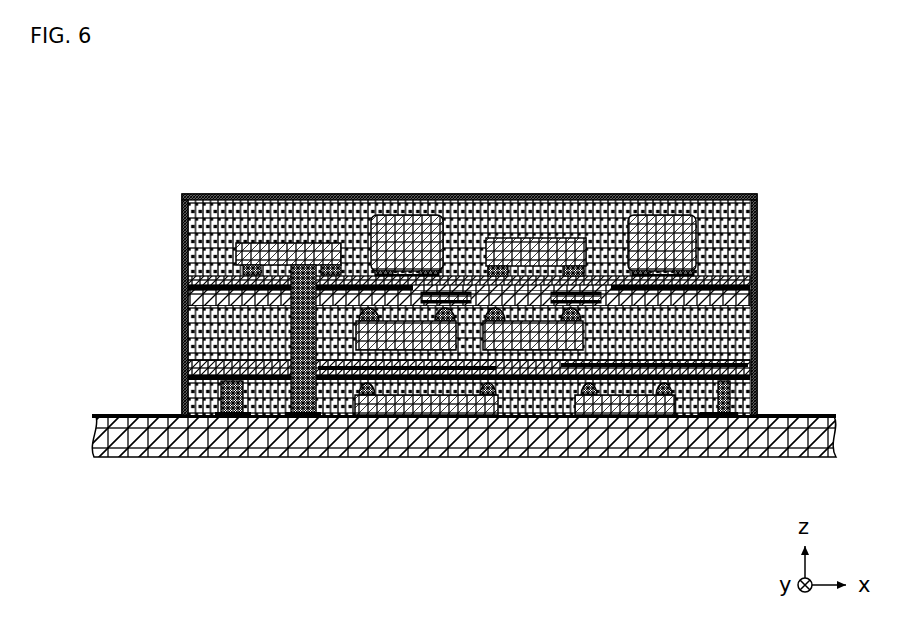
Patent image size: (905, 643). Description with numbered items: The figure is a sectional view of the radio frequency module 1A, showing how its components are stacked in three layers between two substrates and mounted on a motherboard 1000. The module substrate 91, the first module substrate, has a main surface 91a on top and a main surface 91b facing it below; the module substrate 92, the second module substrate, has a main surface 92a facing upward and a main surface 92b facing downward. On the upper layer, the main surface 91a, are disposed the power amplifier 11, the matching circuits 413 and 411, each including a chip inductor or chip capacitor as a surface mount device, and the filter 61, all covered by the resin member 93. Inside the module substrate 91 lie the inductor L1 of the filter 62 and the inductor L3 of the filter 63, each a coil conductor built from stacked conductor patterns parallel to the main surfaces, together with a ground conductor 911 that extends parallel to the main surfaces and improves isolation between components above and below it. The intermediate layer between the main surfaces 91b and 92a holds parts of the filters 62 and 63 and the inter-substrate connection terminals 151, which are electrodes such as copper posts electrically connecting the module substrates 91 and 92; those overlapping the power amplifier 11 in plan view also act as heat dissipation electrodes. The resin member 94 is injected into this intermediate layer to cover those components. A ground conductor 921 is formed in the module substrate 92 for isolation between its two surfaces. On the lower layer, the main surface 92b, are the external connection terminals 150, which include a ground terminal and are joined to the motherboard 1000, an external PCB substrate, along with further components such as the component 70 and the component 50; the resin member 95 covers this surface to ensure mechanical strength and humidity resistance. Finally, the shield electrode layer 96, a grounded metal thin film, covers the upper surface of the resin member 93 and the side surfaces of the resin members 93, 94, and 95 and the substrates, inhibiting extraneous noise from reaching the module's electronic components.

The radio frequency module 1A is at (694, 128).
The power amplifier 11 is at (268, 236).
The matching circuit 413 is at (398, 207).
The matching circuit 411 is at (648, 207).
The filter 61 is at (516, 231).
The filter 62 is at (350, 324).
The filter 63 is at (578, 326).
The electronic component 70 is at (490, 394).
The electronic component 50 is at (668, 397).
The module substrate 91 is at (198, 290).
The main surface 91a is at (200, 270).
The main surface 91b is at (198, 304).
The ground conductor 911 is at (354, 282).
The module substrate 92 is at (198, 360).
The main surface 92a is at (196, 352).
The main surface 92b is at (192, 383).
The ground conductor 921 is at (553, 360).
The resin member 93 is at (726, 234).
The resin member 94 is at (726, 315).
The resin member 95 is at (728, 382).
The shield electrode layer 96 is at (736, 186).
The external connection terminal 150 is at (226, 386).
The inter-substrate connection terminal 151 is at (283, 325).
The motherboard 1000 is at (446, 450).
The inductor L1 is at (452, 286).
The inductor L3 is at (583, 286).